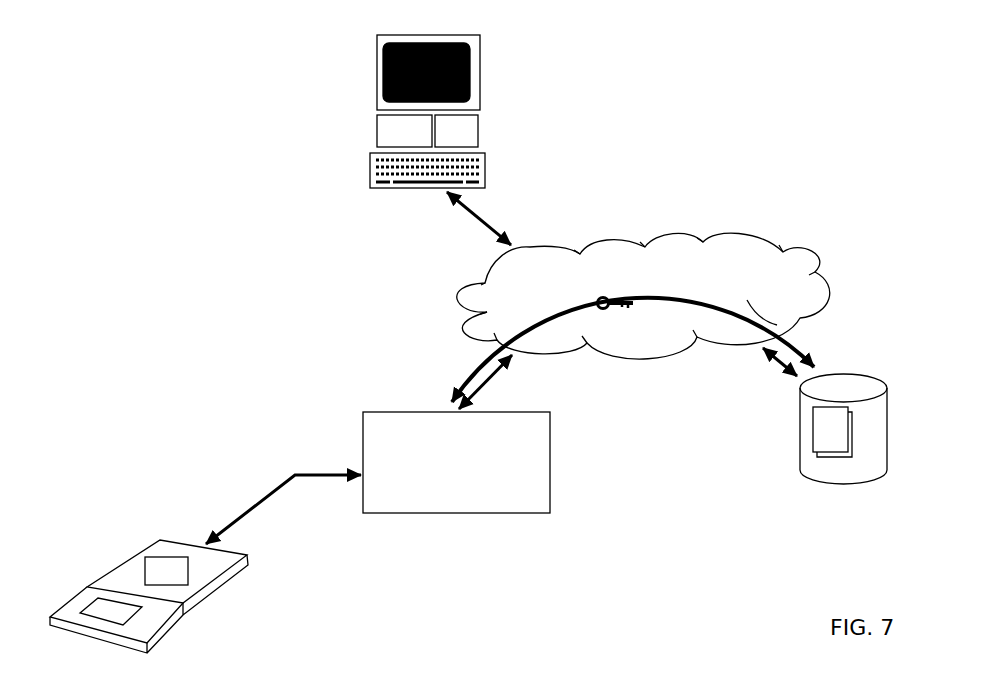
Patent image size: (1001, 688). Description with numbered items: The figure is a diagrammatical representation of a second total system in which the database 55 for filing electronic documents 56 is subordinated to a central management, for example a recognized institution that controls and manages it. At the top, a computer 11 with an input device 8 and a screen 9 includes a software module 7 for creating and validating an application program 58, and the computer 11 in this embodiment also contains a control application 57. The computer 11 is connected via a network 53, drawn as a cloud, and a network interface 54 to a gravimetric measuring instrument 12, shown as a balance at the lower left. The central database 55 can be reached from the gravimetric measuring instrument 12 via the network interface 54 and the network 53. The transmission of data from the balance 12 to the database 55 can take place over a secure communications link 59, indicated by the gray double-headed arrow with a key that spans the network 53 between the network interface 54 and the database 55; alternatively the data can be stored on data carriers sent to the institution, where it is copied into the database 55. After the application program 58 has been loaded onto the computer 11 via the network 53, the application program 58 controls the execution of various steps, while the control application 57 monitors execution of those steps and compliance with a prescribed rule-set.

The software module 7 is at (427, 109).
The input device 8 is at (483, 175).
The screen 9 is at (470, 70).
The computer 11 is at (470, 117).
The control application 57 is at (478, 137).
The network 53 is at (723, 242).
The secure communications link 59 is at (643, 298).
The network interface 54 is at (540, 467).
The database 55 is at (865, 406).
The electronic documents 56 is at (835, 412).
The gravimetric measuring instrument 12 is at (170, 596).
The application program 58 is at (145, 570).